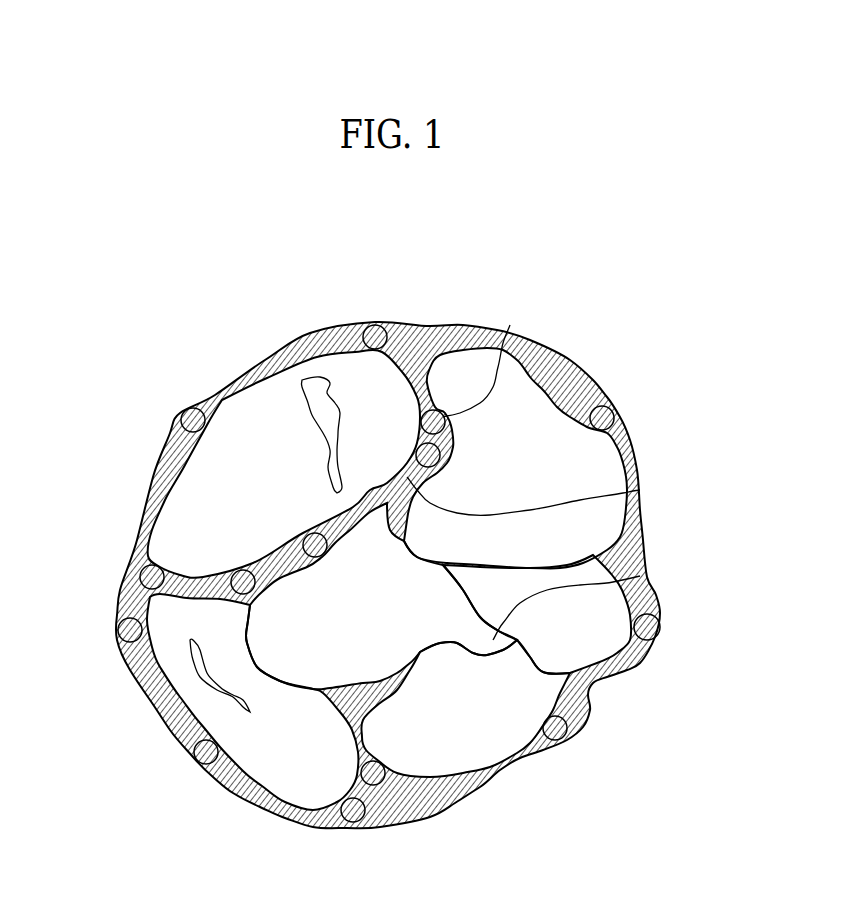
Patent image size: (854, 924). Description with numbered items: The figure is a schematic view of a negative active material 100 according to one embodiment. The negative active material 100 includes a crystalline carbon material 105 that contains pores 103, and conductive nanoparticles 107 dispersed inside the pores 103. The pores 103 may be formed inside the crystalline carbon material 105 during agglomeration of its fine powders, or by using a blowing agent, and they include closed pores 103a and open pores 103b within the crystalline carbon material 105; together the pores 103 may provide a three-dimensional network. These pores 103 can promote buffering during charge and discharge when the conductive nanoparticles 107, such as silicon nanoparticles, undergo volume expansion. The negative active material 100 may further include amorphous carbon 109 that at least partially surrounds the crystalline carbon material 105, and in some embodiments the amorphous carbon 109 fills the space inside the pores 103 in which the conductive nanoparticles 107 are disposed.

The negative active material 100 is at (259, 290).
The pores 103 is at (591, 511).
The closed pores 103a is at (640, 576).
The open pores 103b is at (640, 490).
The crystalline carbon material 105 is at (202, 508).
The conductive nanoparticles 107 is at (510, 325).
The amorphous carbon 109 is at (413, 343).